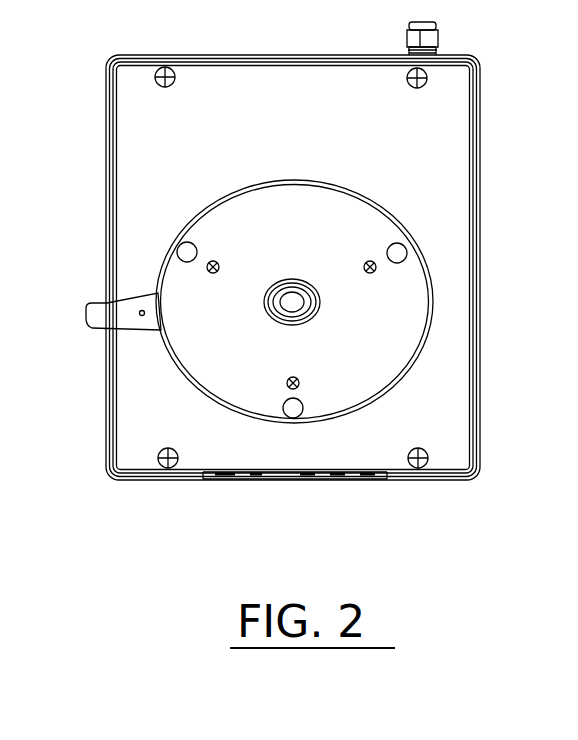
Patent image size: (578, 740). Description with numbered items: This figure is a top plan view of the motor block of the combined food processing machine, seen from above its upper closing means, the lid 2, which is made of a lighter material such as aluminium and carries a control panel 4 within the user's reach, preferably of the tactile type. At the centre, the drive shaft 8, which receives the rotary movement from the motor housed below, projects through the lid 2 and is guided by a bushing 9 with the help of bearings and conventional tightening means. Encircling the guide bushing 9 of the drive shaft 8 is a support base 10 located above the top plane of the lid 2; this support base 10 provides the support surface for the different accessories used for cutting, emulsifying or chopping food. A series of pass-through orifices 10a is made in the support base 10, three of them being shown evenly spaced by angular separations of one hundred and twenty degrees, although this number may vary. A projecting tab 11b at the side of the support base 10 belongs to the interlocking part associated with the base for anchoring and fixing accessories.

The lid 2 is at (477, 178).
The control panel 4 is at (377, 480).
The drive shaft 8 is at (292, 280).
The bushing 9 is at (302, 325).
The support base 10 is at (240, 352).
The pass-through orifices 10a is at (183, 250).
The tab 11b is at (103, 316).